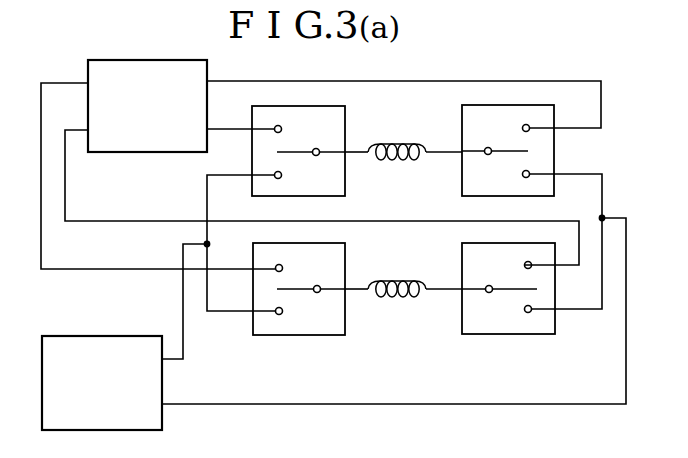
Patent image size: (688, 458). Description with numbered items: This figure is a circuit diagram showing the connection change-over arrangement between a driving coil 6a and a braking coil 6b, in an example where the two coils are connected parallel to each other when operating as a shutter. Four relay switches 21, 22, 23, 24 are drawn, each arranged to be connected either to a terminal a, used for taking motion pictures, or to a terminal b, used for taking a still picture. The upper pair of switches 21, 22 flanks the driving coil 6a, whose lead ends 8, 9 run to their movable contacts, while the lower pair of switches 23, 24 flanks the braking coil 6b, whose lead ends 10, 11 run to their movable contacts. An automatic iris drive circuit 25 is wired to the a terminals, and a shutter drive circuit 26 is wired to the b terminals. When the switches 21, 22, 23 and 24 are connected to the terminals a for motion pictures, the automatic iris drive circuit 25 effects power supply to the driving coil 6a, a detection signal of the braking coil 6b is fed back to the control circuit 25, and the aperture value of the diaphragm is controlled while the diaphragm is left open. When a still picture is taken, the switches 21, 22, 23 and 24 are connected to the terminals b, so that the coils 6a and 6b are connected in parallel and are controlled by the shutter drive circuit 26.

The automatic iris drive circuit 25 is at (127, 153).
The shutter drive circuit 26 is at (122, 336).
The relay switch 21 is at (278, 106).
The relay switch 22 is at (528, 105).
The relay switch 23 is at (298, 335).
The relay switch 24 is at (502, 335).
The driving coil 6a is at (399, 144).
The braking coil 6b is at (399, 281).
The first coil terminal lead 8 is at (359, 154).
The second coil terminal lead 9 is at (438, 154).
The third coil terminal lead 10 is at (359, 291).
The fourth coil terminal lead 11 is at (440, 291).